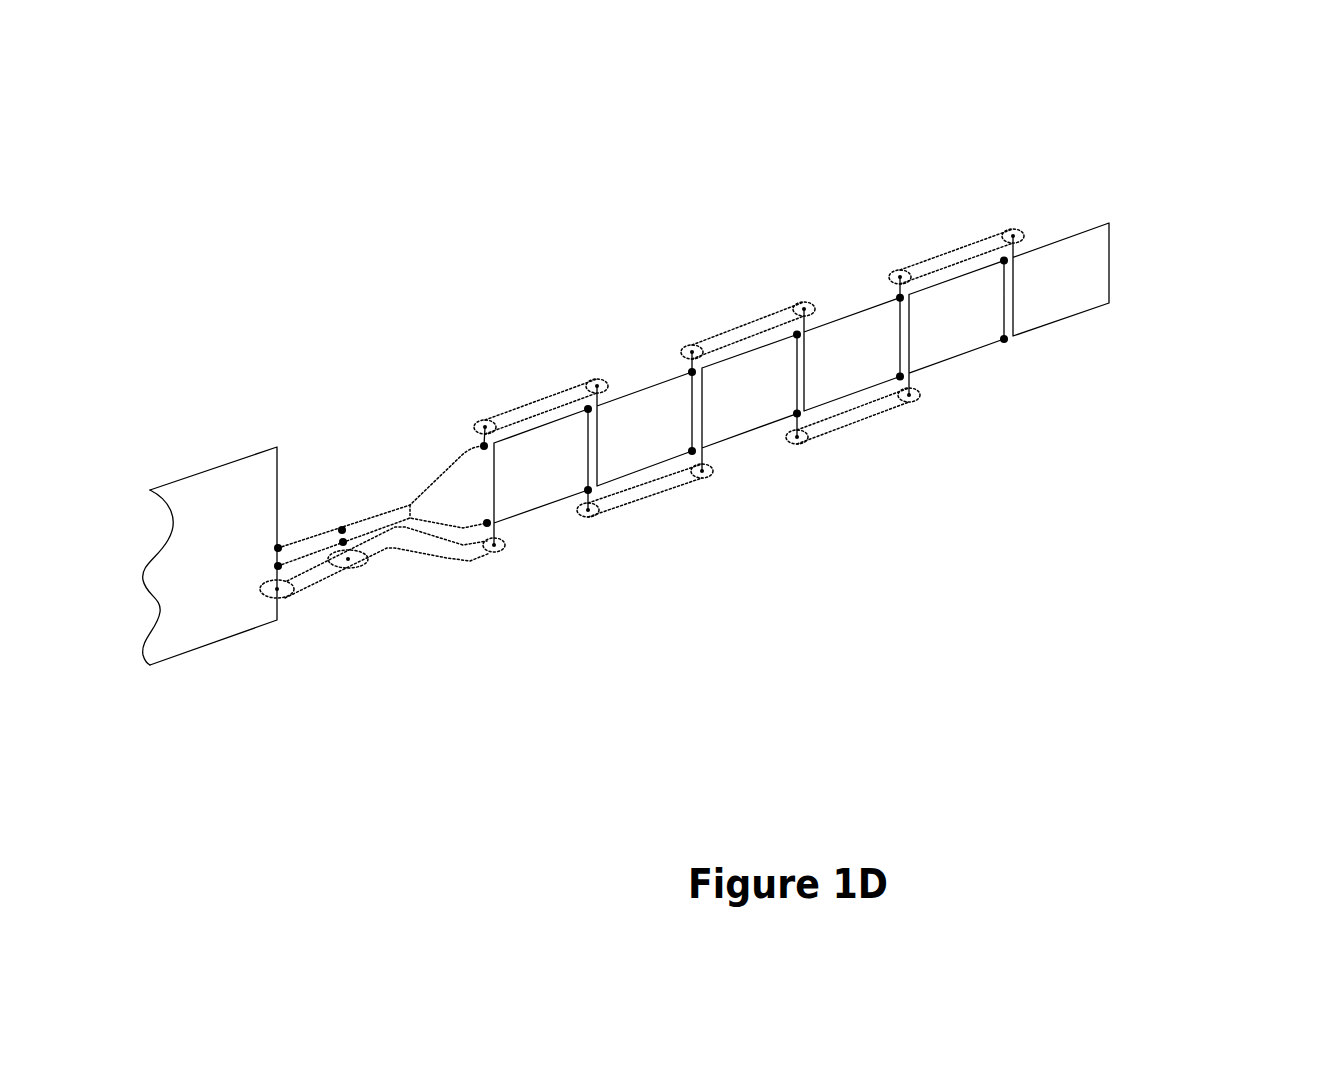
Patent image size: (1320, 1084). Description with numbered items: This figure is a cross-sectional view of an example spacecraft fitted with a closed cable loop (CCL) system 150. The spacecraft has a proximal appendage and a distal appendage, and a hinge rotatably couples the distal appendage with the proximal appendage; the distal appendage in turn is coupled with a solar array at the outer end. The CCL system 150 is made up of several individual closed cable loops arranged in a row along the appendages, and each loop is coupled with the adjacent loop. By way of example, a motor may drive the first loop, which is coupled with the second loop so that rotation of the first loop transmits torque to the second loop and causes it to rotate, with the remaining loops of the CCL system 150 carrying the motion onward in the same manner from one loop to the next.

The closed cable loop (CCL) system 150 is at (586, 342).